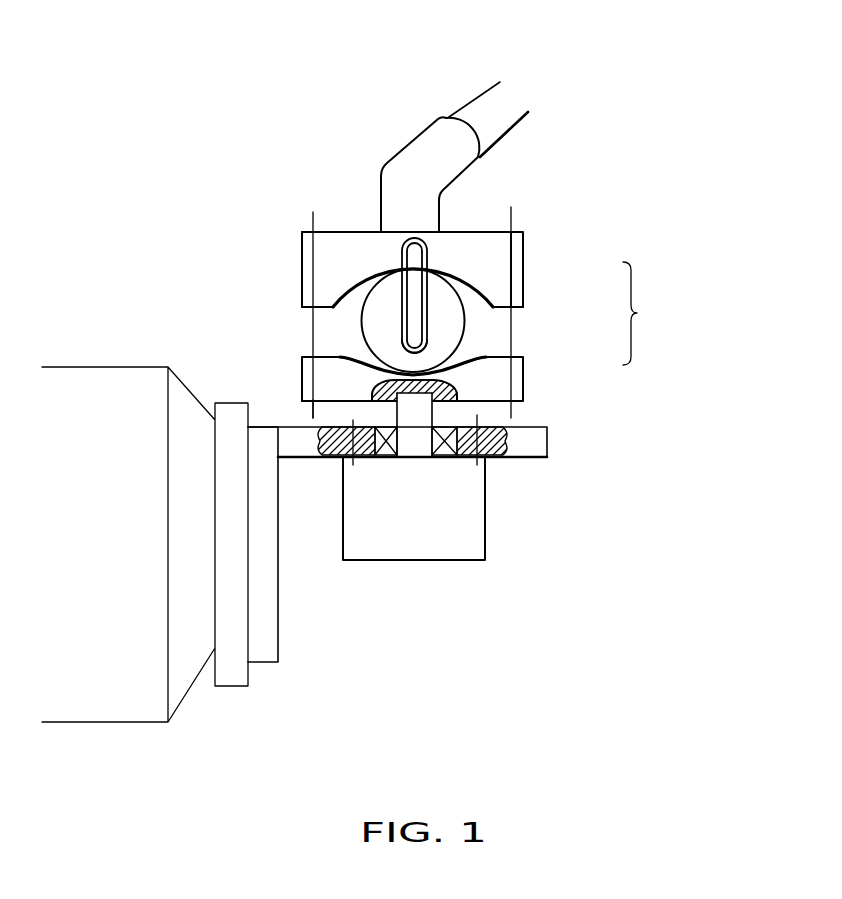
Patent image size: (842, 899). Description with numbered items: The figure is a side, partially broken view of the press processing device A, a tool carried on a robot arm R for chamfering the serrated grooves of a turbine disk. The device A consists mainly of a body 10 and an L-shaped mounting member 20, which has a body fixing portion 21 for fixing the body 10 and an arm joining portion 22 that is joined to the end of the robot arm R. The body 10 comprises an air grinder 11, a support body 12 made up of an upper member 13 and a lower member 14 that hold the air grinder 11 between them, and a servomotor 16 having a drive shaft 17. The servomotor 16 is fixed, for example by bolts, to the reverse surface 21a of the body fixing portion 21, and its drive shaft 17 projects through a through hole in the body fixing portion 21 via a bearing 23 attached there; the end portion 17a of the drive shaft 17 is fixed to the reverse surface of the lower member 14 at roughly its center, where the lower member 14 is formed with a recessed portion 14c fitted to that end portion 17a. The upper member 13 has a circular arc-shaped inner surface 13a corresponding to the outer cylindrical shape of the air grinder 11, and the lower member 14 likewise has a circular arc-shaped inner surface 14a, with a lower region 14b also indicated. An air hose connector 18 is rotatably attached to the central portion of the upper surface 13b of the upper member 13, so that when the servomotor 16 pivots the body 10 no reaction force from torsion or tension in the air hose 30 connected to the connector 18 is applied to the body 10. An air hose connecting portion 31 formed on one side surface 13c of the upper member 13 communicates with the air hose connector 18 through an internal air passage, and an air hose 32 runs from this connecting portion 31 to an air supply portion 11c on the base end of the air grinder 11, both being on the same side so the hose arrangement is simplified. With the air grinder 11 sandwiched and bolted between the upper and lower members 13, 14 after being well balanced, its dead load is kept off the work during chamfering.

The press processing device A is at (732, 85).
The robot arm R is at (100, 367).
The body 10 is at (305, 190).
The air grinder 11 is at (363, 327).
The air supply portion 11c is at (425, 340).
The support body 12 is at (649, 313).
The upper member 13 is at (527, 278).
The circular arc-shaped inner surface 13a is at (327, 313).
The upper surface 13b is at (486, 231).
The side surface 13c is at (327, 252).
The lower member 14 is at (523, 356).
The circular arc-shaped inner surface 14a is at (365, 356).
The lower member lower edge 14b is at (322, 410).
The recessed portion 14c is at (373, 379).
The servomotor 16 is at (486, 530).
The drive shaft 17 is at (433, 410).
The end portion 17a is at (457, 393).
The air hose connector 18 is at (421, 135).
The L-shaped mounting member 20 is at (548, 435).
The body fixing portion 21 is at (533, 458).
The reverse surface 21a is at (515, 458).
The arm joining portion 22 is at (279, 650).
The bearing 23 is at (381, 459).
The air hose 30 is at (478, 83).
The air hose connecting portion 31 is at (401, 238).
The air hose 32 is at (425, 293).